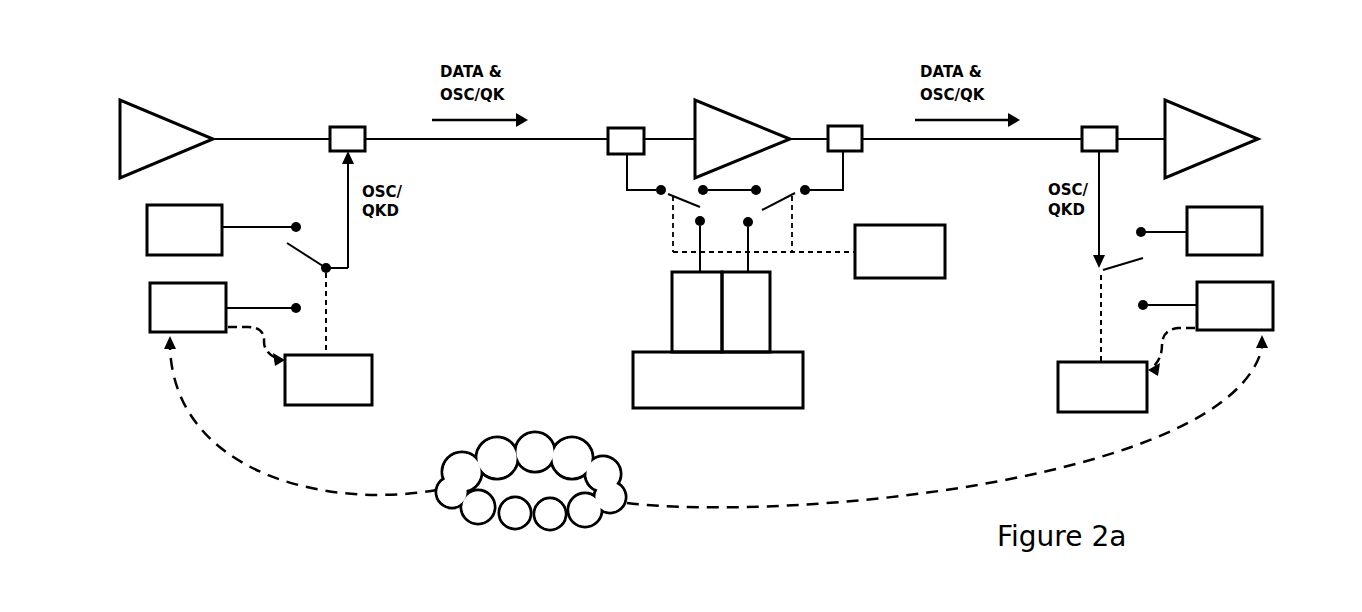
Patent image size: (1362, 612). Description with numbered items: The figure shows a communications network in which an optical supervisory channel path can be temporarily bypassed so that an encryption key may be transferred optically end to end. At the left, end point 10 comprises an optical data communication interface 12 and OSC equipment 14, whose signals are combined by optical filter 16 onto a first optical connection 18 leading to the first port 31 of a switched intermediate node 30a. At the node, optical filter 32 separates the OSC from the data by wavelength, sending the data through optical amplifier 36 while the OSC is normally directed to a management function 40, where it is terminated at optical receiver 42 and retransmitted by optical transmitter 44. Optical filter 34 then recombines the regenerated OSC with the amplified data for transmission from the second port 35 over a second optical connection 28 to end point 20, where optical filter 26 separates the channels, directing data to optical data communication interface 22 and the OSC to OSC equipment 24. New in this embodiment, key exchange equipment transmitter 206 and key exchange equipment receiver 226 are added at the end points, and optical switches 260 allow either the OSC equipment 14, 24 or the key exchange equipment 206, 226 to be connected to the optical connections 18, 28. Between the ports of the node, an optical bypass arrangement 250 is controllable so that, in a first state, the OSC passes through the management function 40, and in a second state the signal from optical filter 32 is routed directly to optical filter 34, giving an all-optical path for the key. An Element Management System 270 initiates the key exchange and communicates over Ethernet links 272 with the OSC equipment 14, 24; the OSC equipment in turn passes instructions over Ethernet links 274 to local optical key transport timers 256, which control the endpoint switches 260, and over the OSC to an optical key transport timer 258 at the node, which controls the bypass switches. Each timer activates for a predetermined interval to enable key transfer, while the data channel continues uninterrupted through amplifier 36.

The end point 10 is at (166, 294).
The optical data communication interface 12 is at (166, 139).
The OSC equipment 14 is at (206, 307).
The optical filter 16 is at (348, 126).
The first optical connection 18 is at (469, 154).
The end point 20 is at (1251, 284).
The optical data communication interface 22 is at (1211, 139).
The OSC equipment 24 is at (1223, 306).
The optical filter 26 is at (1099, 127).
The second optical connection 28 is at (955, 157).
The switched intermediate node 30a is at (675, 102).
The first port 31 is at (605, 141).
The optical filter 32 is at (630, 128).
The optical filter 34 is at (843, 126).
The second port 35 is at (866, 141).
The optical amplifier 36 is at (742, 139).
The management function 40 is at (718, 340).
The optical receiver 42 is at (679, 312).
The optical transmitter 44 is at (761, 312).
The key exchange equipment transmitter 206 is at (199, 230).
The key exchange equipment receiver 226 is at (1226, 231).
The optical bypass arrangement 250 is at (636, 224).
The local optical key transport timer 256 is at (716, 383).
The optical key transport timer 258 is at (900, 267).
The optical switch 260 is at (712, 256).
The Element Management System 270 is at (546, 511).
The Ethernet link 272 is at (716, 421).
The Ethernet link 274 is at (712, 351).